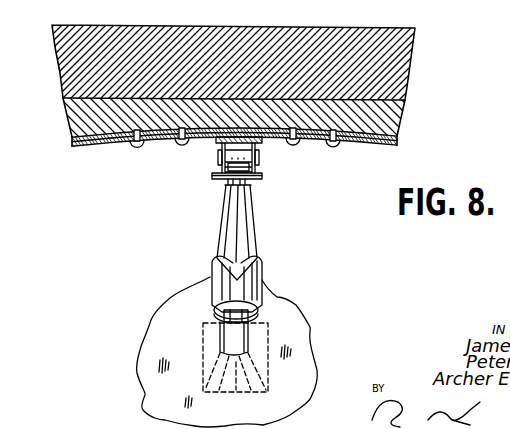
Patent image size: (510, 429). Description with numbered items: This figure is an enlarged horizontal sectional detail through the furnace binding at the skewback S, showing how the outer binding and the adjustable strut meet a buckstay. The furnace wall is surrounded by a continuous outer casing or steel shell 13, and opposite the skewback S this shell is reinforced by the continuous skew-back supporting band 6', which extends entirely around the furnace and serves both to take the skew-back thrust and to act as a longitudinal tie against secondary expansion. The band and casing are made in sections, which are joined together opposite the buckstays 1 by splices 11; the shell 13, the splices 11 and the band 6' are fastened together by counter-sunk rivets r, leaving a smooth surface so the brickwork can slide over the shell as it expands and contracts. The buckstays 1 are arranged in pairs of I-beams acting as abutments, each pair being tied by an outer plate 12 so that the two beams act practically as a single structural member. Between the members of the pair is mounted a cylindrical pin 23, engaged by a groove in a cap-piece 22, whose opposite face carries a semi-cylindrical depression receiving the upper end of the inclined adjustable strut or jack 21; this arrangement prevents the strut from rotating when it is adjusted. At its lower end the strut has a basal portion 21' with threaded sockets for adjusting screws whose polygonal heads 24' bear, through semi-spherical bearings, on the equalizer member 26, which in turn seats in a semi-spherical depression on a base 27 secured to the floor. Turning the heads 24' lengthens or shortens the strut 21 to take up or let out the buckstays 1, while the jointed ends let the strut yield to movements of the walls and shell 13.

The skewback S is at (80, 84).
The skew-back supporting band 6' is at (240, 142).
The outer casing or continuous steel plate or shell 13 is at (393, 146).
The rivets r is at (340, 152).
The splices 11 is at (352, 136).
The buckstays 1 is at (256, 147).
The cylindrical pin 23 is at (226, 160).
The cap-piece 22 is at (257, 167).
The outer plate 12 is at (224, 181).
The adjustable strut or jack 21 is at (222, 232).
The basal portion of the strut 21' is at (221, 282).
The polygonal heads of the adjusting screws 24' is at (215, 314).
The equalizer member 26 is at (250, 316).
The base 27 is at (228, 340).